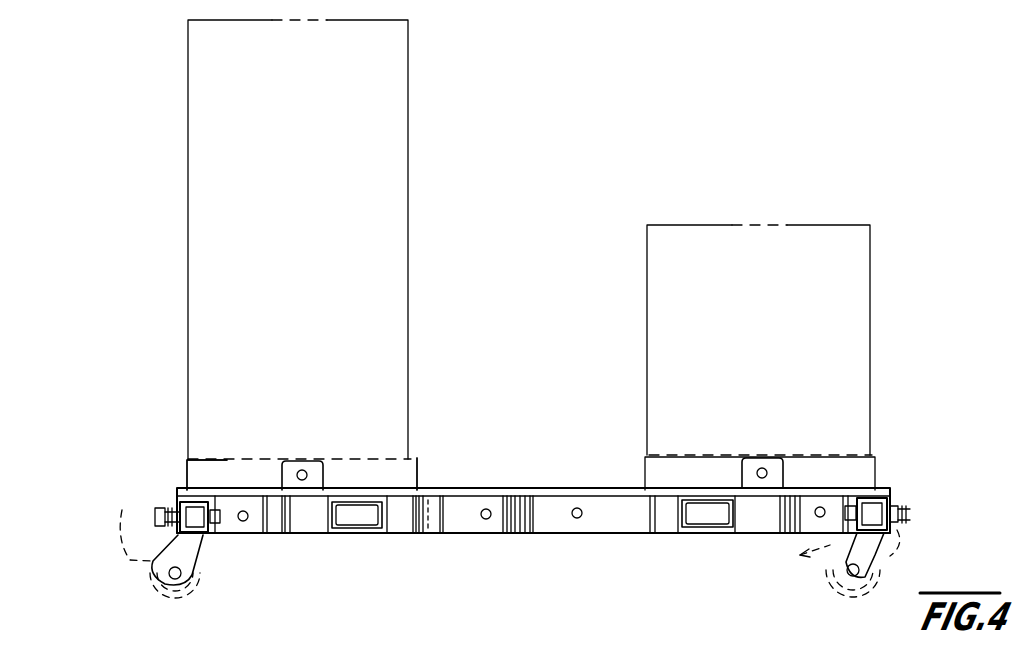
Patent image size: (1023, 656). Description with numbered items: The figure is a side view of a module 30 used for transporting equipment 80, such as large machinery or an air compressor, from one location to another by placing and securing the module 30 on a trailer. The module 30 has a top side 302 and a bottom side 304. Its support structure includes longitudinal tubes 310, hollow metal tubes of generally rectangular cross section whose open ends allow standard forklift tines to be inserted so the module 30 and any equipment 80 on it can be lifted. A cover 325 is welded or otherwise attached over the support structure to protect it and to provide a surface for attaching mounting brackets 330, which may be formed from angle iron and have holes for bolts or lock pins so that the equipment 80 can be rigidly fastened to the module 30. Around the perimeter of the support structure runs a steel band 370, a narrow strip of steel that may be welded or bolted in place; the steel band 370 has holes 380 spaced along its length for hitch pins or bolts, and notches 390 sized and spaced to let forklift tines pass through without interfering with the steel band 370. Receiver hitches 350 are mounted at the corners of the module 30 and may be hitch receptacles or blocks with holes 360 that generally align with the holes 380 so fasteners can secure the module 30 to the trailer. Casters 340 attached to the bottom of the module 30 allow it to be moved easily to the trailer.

The equipment 80 is at (411, 247).
The module 30 is at (133, 430).
The top side 302 is at (125, 457).
The cover 325 is at (125, 457).
The longitudinal tube 310 is at (310, 520).
The steel band 370 is at (458, 518).
The bottom side 304 is at (625, 533).
The mounting bracket 330 is at (163, 397).
The notch 390 is at (377, 503).
The hole 380 is at (575, 518).
The receiver hitch 350 is at (50, 480).
The hole 360 is at (217, 537).
The caster 340 is at (93, 503).